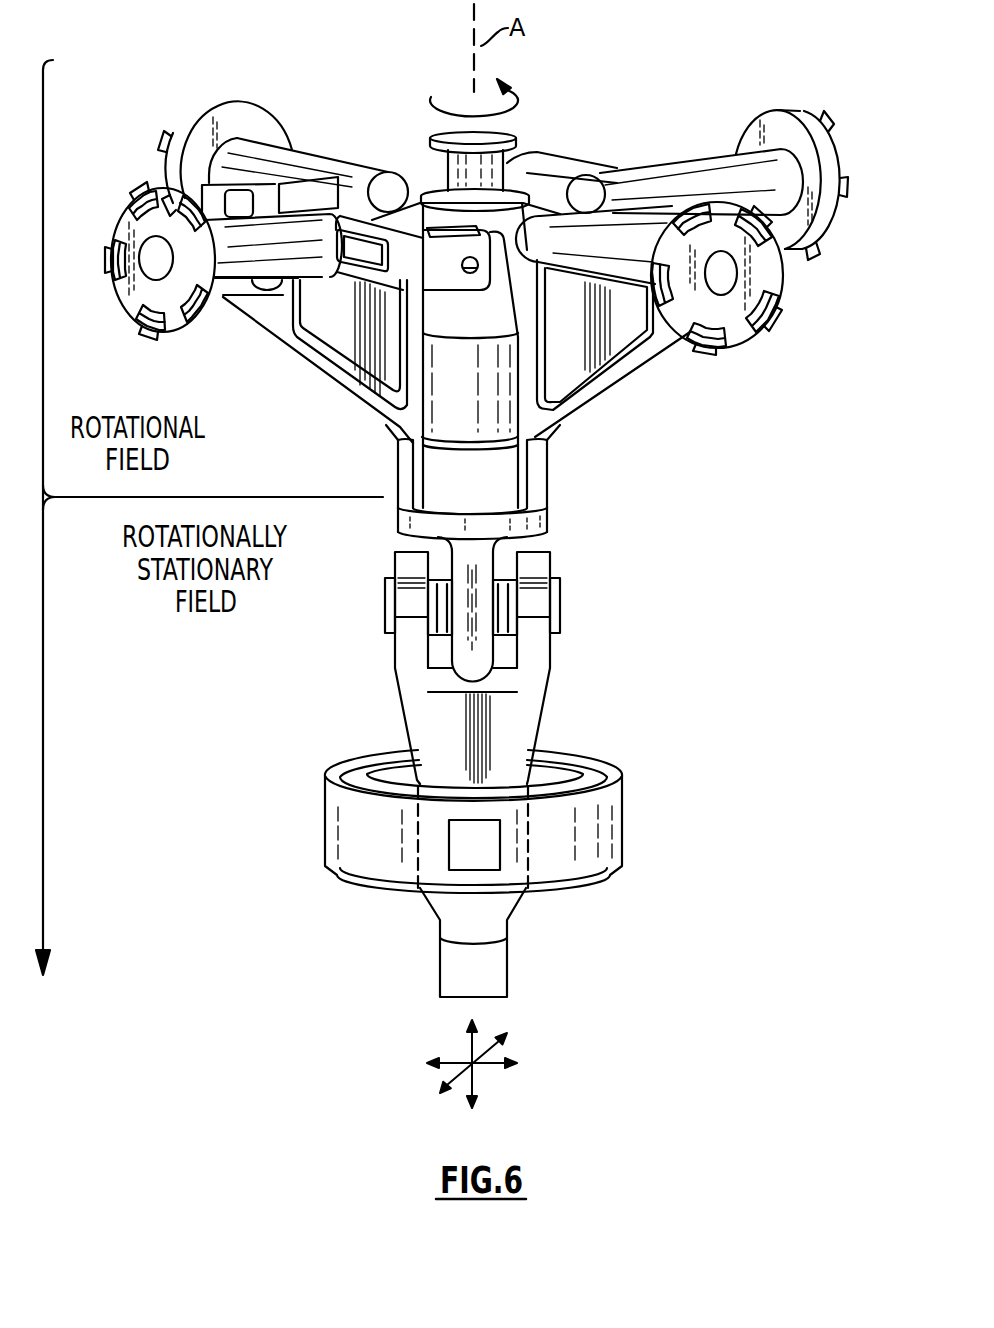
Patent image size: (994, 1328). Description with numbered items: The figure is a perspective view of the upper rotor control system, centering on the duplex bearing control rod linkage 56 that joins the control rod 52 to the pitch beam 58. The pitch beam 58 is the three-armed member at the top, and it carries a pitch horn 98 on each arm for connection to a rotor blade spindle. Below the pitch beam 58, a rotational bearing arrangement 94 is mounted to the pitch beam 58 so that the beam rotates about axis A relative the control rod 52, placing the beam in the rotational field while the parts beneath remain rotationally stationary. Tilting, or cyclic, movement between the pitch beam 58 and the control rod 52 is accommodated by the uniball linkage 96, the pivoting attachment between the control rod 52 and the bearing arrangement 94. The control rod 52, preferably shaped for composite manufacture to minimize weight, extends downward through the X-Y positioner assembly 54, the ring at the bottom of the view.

The control rod 52 is at (523, 718).
The X-Y positioner assembly 54 is at (640, 824).
The duplex bearing control rod linkage 56 is at (647, 564).
The pitch beam 58 is at (365, 345).
The rotational bearing arrangement 94 is at (392, 445).
The uniball linkage 96 is at (560, 610).
The pitch horn 98 is at (367, 253).